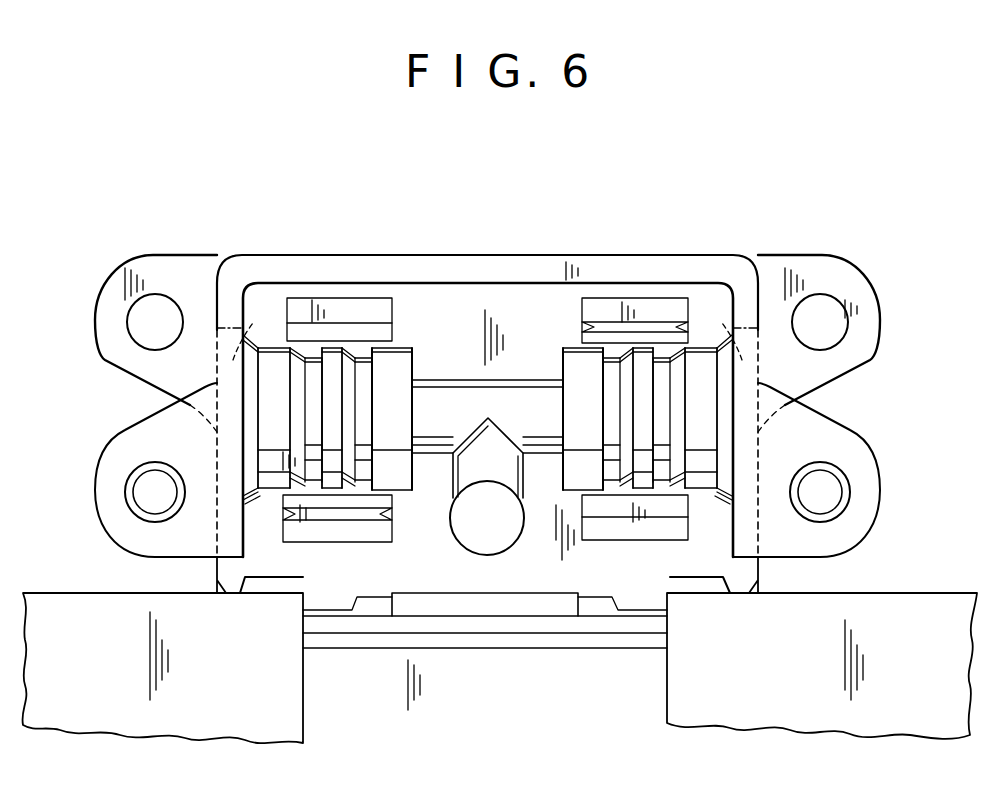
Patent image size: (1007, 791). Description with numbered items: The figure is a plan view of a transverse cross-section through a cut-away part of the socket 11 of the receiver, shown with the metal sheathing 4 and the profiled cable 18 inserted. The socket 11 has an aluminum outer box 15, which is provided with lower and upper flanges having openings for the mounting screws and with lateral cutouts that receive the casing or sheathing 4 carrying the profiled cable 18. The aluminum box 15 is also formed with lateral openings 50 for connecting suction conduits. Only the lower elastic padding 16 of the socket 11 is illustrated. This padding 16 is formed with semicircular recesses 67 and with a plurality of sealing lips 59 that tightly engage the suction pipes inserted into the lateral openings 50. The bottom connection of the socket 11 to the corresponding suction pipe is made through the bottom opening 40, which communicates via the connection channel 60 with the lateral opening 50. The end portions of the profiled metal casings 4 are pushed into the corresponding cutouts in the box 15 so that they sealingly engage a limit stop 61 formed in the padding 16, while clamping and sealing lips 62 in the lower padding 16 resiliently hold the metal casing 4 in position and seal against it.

The metal sheathing 4 is at (83, 713).
The socket 11 is at (325, 252).
The aluminum outer box 15 is at (625, 262).
The lower elastic padding 16 is at (683, 556).
The cable 18 is at (575, 637).
The bottom opening 40 is at (472, 535).
The lateral opening 50 is at (250, 345).
The sealing lip 59 is at (616, 358).
The connection channel 60 is at (543, 383).
The limit stop 61 is at (327, 600).
The clamping and sealing lip 62 is at (233, 583).
The semicircular recess 67 is at (401, 356).